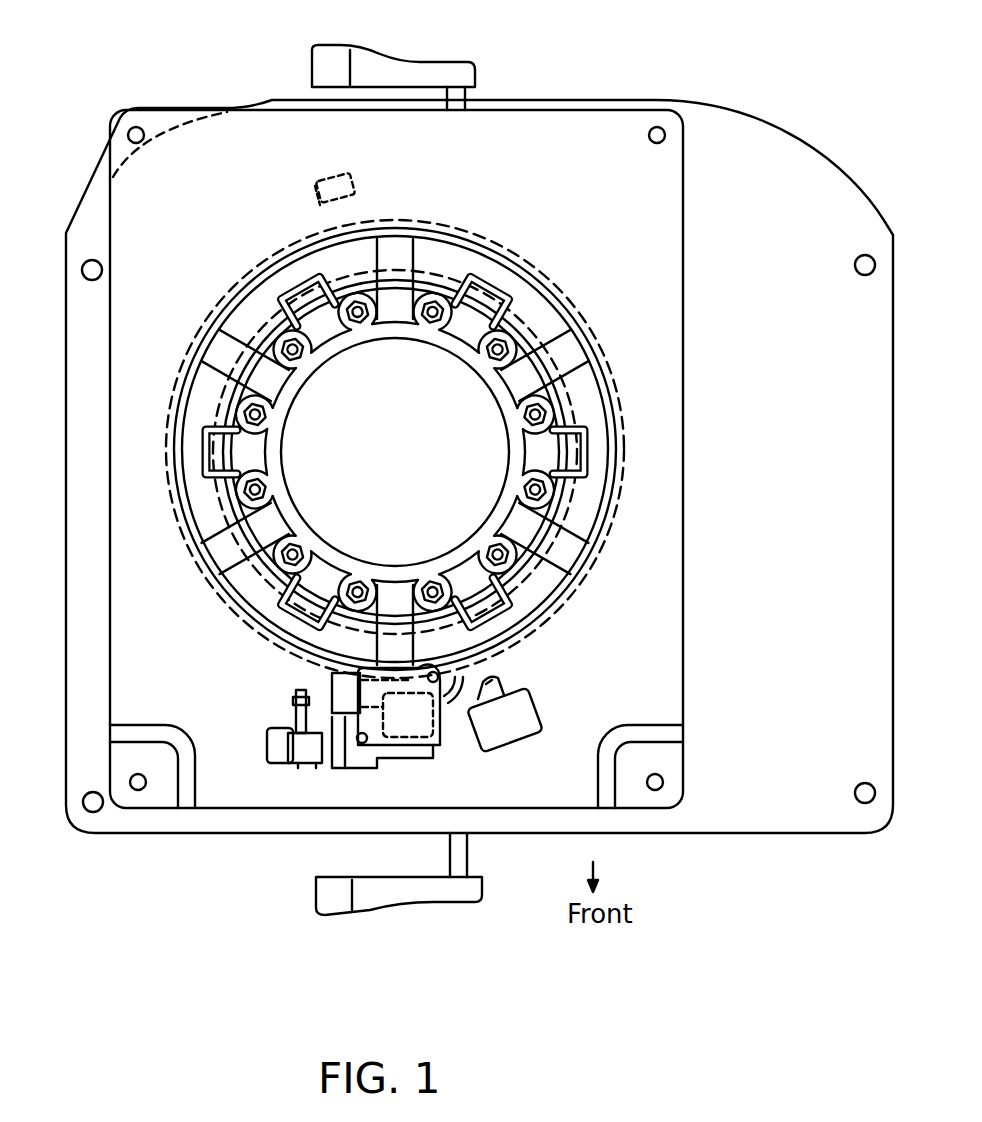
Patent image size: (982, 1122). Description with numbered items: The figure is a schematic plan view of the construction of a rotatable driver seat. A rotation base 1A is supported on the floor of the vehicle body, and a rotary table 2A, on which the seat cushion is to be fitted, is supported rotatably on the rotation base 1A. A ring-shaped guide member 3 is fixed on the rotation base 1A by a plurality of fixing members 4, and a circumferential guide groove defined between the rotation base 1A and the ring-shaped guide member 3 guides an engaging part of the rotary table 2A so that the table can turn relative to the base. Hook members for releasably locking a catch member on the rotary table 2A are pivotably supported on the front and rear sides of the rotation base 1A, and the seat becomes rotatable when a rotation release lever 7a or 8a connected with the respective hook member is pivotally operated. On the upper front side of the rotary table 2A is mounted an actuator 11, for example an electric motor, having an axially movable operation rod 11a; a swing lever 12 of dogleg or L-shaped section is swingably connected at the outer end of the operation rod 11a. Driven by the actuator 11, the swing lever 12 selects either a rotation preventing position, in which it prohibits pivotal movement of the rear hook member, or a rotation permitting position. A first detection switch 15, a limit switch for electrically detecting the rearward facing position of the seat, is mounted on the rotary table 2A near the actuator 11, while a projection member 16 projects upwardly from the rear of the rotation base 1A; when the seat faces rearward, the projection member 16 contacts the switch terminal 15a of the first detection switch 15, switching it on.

The rotation base 1A is at (232, 825).
The rotary table 2A is at (681, 636).
The ring-shaped guide member 3 is at (318, 578).
The fixing members 4 is at (298, 552).
The rotation release lever 7a is at (392, 902).
The rotation release lever 8a is at (388, 68).
The actuator 11 is at (330, 677).
The operation rod 11a is at (328, 680).
The swing lever 12 is at (268, 742).
The first detection switch 15 is at (507, 690).
The switch terminal 15a is at (458, 712).
The projection member 16 is at (358, 185).